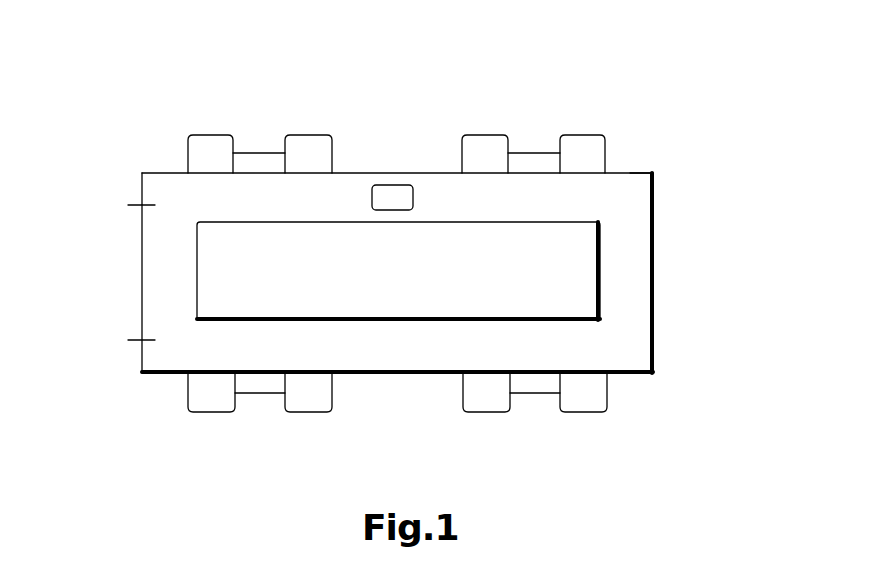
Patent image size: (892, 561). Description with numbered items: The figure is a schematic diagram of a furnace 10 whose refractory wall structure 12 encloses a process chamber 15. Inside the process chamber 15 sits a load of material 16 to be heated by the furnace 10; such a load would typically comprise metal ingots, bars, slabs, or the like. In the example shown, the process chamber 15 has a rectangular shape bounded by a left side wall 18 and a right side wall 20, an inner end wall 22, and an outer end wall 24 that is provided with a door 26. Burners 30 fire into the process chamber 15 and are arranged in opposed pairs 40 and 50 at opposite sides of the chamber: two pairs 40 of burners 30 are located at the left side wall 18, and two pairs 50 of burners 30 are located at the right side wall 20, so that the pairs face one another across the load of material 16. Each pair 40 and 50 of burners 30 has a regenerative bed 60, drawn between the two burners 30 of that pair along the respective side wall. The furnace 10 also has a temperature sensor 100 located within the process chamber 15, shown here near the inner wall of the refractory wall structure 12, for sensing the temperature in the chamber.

The furnace 10 is at (86, 128).
The refractory wall structure 12 is at (165, 172).
The process chamber 15 is at (513, 212).
The load of material 16 is at (300, 222).
The left side wall 18 is at (645, 172).
The right side wall 20 is at (640, 375).
The inner end wall 22 is at (655, 275).
The outer end wall 24 is at (142, 188).
The door 26 is at (142, 270).
The burner 30 is at (210, 145).
The pair of burners 40 is at (242, 82).
The pair of burners 50 is at (213, 450).
The regenerative bed 60 is at (258, 155).
The temperature sensor 100 is at (388, 192).